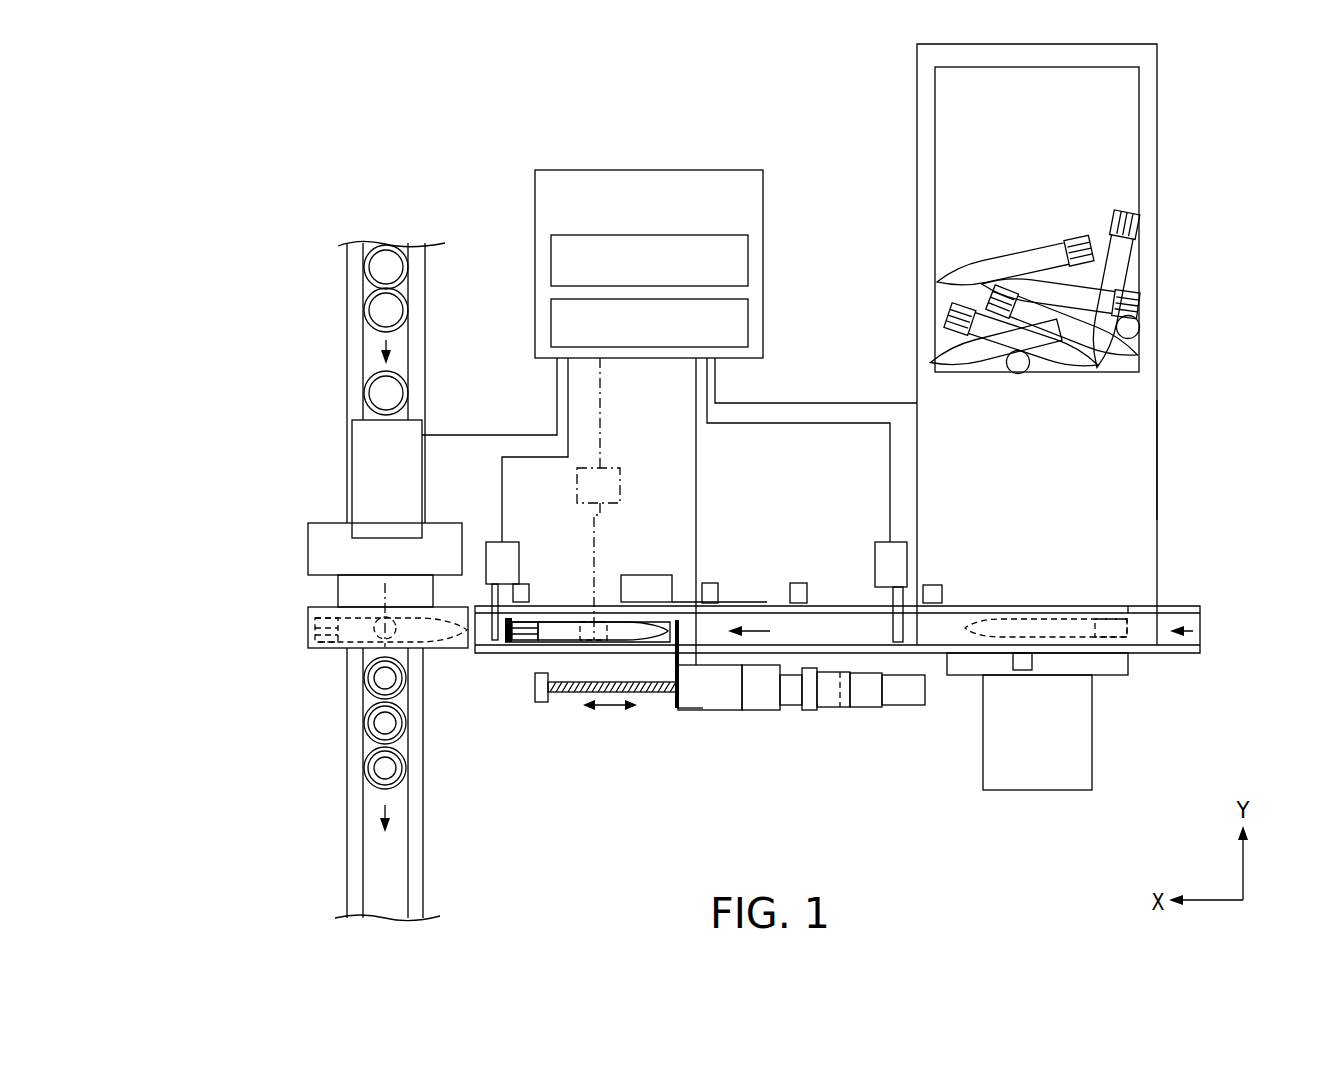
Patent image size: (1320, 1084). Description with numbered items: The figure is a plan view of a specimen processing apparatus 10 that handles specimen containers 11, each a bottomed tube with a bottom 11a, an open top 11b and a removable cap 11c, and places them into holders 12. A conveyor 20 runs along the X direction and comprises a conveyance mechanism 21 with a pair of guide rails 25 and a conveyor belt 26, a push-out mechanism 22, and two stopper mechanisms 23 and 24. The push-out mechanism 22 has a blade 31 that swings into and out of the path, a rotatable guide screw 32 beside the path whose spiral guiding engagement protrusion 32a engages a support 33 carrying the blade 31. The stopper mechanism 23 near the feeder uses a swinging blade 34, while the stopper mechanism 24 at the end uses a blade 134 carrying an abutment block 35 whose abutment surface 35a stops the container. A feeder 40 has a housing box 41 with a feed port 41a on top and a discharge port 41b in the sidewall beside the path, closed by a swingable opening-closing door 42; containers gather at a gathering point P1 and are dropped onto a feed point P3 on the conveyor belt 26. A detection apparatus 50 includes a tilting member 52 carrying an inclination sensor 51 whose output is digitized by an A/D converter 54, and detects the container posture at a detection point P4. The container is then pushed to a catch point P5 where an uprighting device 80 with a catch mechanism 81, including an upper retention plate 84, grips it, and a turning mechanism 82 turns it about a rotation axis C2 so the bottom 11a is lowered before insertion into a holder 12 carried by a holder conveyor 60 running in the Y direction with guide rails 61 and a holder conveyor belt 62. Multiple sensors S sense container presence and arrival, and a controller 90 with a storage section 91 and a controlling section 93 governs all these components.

The specimen processing apparatus 10 is at (530, 101).
The specimen container 11 is at (1085, 265).
The bottom 11a is at (660, 622).
The top 11b is at (522, 645).
The cap 11c is at (1100, 619).
The holder 12 is at (408, 310).
The conveyor 20 is at (880, 690).
The conveyance mechanism 21 is at (748, 640).
The push-out mechanism 22 is at (768, 712).
The stopper mechanism 23 is at (875, 560).
The stopper mechanism 24 is at (505, 560).
The guide rails 25 is at (820, 692).
The conveyor belt 26 is at (855, 690).
The blade 31 is at (677, 630).
The guide screw 32 is at (540, 702).
The guiding engagement protrusion 32a is at (563, 705).
The support 33 is at (698, 712).
The blade 34 is at (893, 620).
The abutment block 35 is at (495, 655).
The abutment surface 35a is at (510, 620).
The feeder 40 is at (1157, 410).
The housing box 41 is at (1157, 465).
The feed port 41a is at (1139, 182).
The discharge port 41b is at (1138, 608).
The opening-closing door 42 is at (1130, 660).
The detection apparatus 50 is at (600, 640).
The inclination sensor 51 is at (625, 645).
The tilting member 52 is at (640, 575).
The A/D converter 54 is at (615, 468).
The holder conveyor 60 is at (423, 851).
The guide rails 61 is at (415, 905).
The holder conveyor belt 62 is at (377, 851).
The uprighting device 80 is at (308, 543).
The catch mechanism 81 is at (308, 625).
The turning mechanism 82 is at (338, 590).
The retention plate 84 is at (322, 648).
The controller 90 is at (730, 170).
The storage section 91 is at (748, 255).
The controlling section 93 is at (748, 325).
The blade 134 is at (505, 648).
The rotation axis C2 is at (390, 587).
The gathering point P1 is at (1130, 340).
The feed point P3 is at (975, 648).
The detection point P4 is at (565, 640).
The catch point P5 is at (375, 635).
The sensor S is at (521, 584).